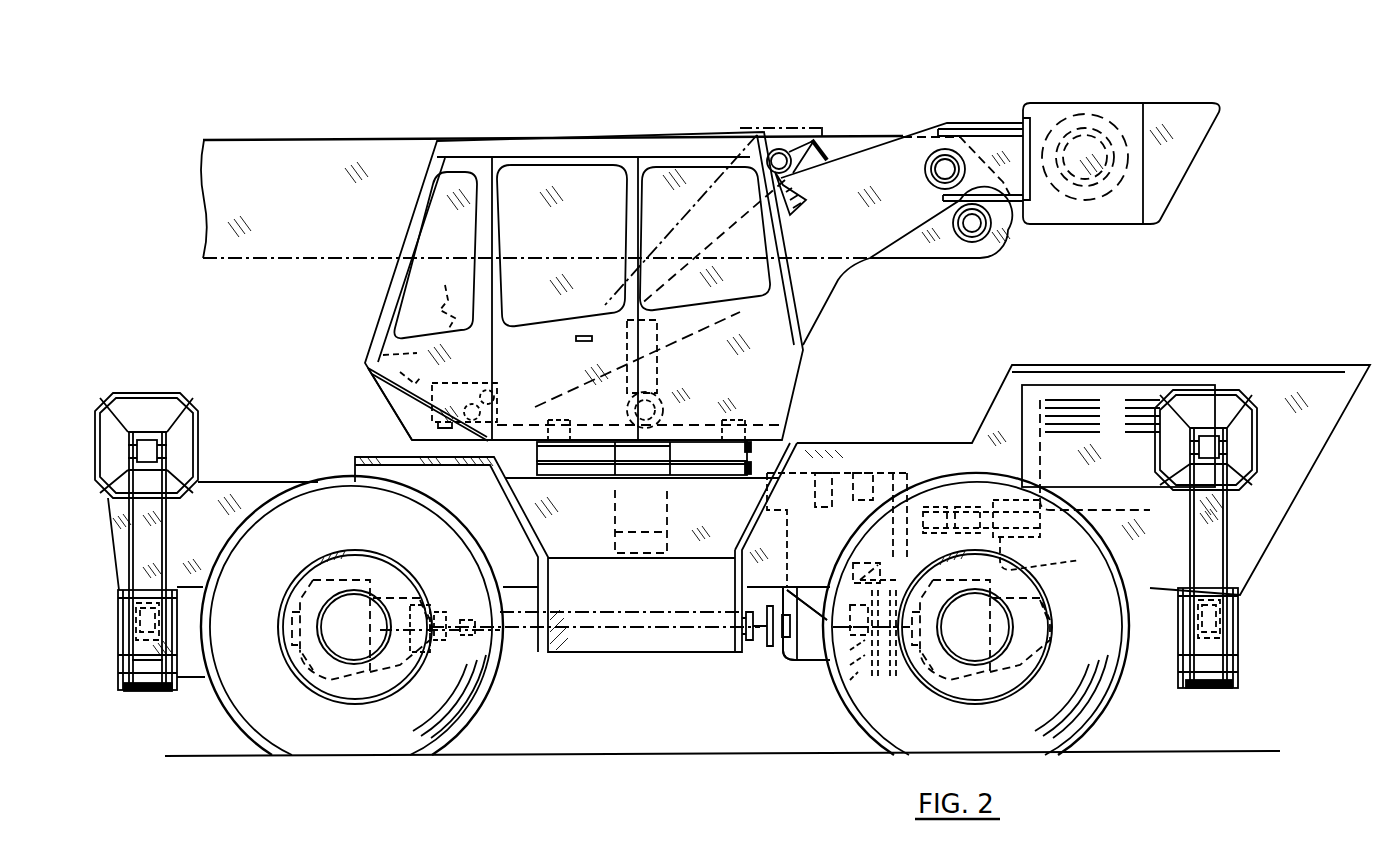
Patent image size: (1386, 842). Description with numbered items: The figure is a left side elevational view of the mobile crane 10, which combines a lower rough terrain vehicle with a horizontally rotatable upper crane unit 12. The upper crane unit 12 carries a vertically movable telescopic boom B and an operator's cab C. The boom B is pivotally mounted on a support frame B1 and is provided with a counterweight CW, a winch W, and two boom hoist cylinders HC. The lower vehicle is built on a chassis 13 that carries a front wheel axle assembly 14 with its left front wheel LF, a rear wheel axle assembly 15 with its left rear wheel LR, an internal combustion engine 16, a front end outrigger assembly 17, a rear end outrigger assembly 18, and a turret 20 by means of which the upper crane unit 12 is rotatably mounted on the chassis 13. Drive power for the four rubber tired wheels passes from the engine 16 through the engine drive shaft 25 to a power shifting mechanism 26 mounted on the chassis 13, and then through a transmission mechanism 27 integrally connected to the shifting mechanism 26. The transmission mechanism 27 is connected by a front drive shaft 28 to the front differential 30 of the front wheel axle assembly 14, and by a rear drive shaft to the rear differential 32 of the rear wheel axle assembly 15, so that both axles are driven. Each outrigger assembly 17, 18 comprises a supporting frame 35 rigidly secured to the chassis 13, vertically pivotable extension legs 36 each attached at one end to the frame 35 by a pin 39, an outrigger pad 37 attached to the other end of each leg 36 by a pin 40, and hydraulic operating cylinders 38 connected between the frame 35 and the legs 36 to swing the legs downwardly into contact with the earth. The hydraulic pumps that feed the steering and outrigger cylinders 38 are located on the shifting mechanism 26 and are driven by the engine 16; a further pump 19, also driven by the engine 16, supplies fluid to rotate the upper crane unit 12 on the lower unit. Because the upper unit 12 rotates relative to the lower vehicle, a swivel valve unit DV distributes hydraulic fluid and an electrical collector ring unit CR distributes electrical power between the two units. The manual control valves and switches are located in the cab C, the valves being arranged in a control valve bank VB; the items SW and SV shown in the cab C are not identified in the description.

The telescopic boom B is at (305, 140).
The mobile crane 10 is at (655, 132).
The winch W is at (1107, 115).
The counterweight CW is at (1200, 104).
The upper crane unit 12 is at (370, 311).
The operators cab C is at (366, 352).
The steering wheel SW is at (462, 300).
The steering valve SV is at (393, 362).
The control valve bank VB is at (468, 382).
The electrical collector ring unit CR is at (656, 366).
The boom hoist cylinders HC is at (722, 325).
The support frame B1 is at (840, 266).
The turret 20 is at (748, 482).
The swivel valve unit DV is at (670, 515).
The chassis 13 is at (265, 482).
The pump 19 is at (820, 450).
The internal combustion engine 16 is at (1105, 400).
The outrigger pad 37 is at (152, 398).
The pin 40 is at (163, 445).
The extension legs 36 is at (126, 538).
The supporting frame 35 is at (120, 668).
The hydraulic operating cylinders 38 is at (135, 640).
The front end outrigger assembly 17 is at (122, 686).
The rear end outrigger assembly 18 is at (1238, 676).
The pin 39 is at (145, 693).
The left front wheel LF is at (480, 715).
The front wheel axle assembly 14 is at (300, 631).
The front differential 30 is at (428, 610).
The front drive shaft 28 is at (530, 642).
The transmission mechanism 27 is at (808, 660).
The left rear wheel LR is at (1105, 713).
The rear wheel axle assembly 15 is at (1035, 630).
The power shifting mechanism 26 is at (876, 486).
The engine drive shaft 25 is at (945, 518).
The rear differential 32 is at (920, 598).